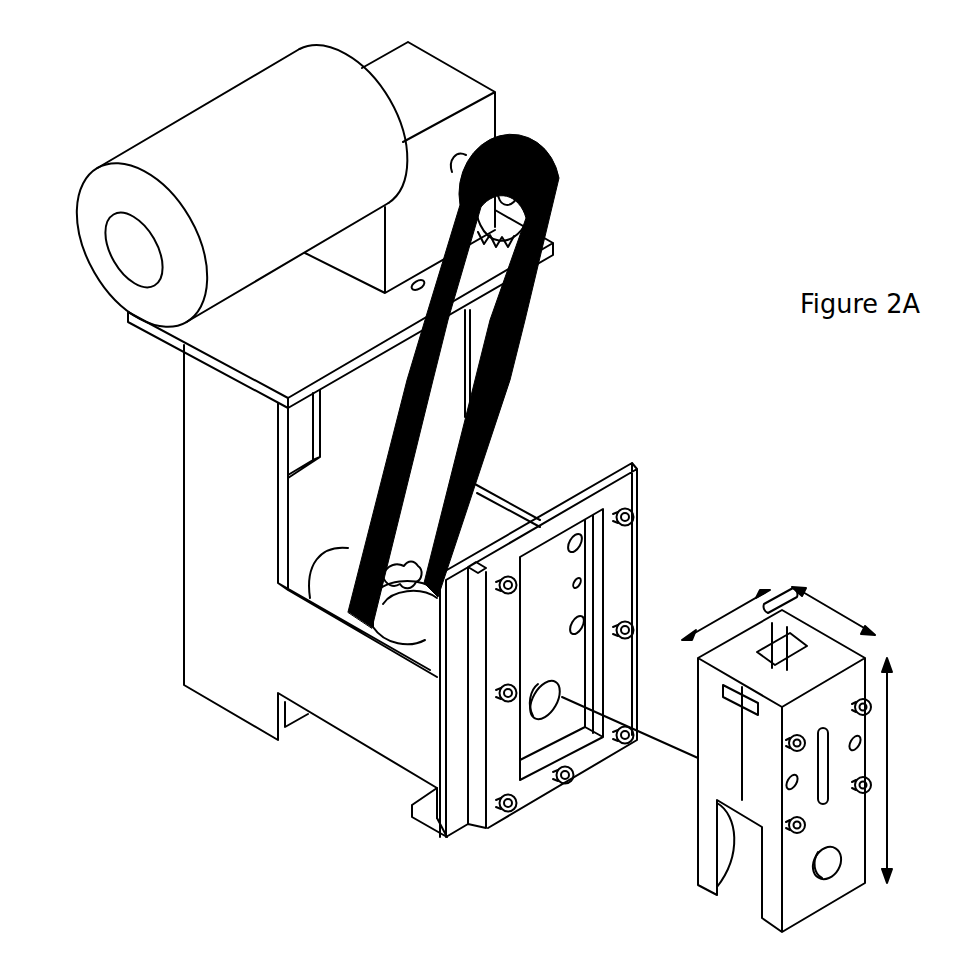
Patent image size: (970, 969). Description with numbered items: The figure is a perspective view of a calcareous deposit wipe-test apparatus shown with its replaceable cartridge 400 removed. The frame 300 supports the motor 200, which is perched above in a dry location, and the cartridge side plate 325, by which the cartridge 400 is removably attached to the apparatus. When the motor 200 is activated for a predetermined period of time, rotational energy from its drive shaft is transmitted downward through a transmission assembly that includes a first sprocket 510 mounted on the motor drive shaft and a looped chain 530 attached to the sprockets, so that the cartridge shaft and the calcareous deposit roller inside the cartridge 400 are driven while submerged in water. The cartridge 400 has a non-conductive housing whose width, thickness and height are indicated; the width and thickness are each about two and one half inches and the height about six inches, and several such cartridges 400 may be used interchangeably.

The motor 200 is at (477, 127).
The first sprocket 510 is at (528, 188).
The looped chain 530 is at (516, 345).
The cartridge side plate 325 is at (543, 532).
The frame 300 is at (183, 660).
The replaceable cartridge 400 is at (835, 650).